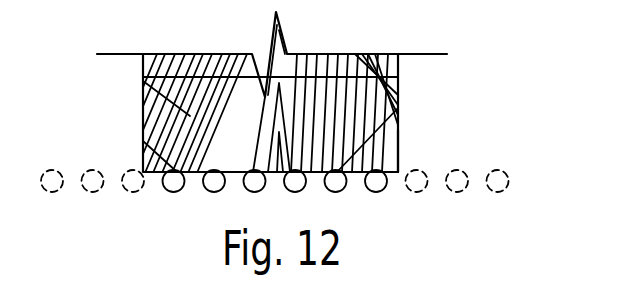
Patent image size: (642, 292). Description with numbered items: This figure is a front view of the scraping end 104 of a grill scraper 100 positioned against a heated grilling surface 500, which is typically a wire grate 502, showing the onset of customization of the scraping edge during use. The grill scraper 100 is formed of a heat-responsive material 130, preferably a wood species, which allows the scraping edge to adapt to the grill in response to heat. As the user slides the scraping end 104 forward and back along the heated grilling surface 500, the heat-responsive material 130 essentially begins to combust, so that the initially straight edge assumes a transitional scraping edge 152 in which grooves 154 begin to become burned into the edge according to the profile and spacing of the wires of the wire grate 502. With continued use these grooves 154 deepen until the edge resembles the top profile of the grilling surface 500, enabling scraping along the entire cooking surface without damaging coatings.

The grill scraper 100 is at (418, 77).
The heat-responsive material 130 is at (148, 85).
The grooves 154 is at (146, 142).
The scraping end 104 is at (400, 163).
The transitional scraping edge 152 is at (353, 173).
The grilling surface 500 is at (508, 183).
The wire grate 502 is at (92, 192).